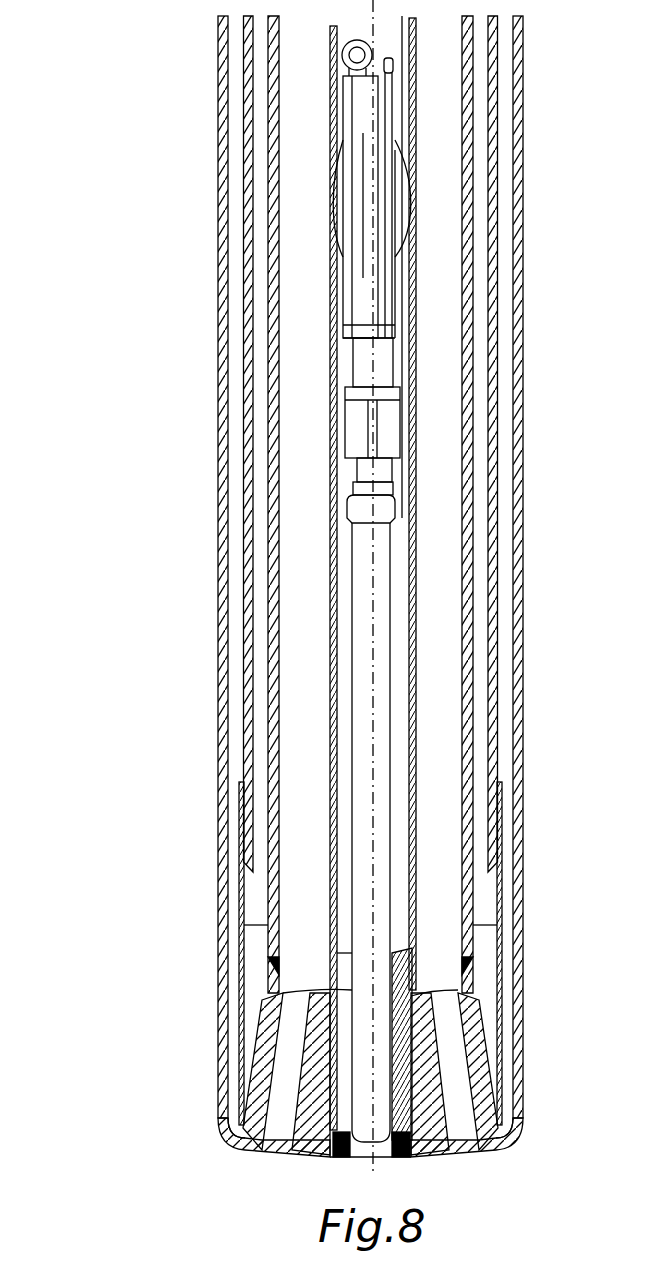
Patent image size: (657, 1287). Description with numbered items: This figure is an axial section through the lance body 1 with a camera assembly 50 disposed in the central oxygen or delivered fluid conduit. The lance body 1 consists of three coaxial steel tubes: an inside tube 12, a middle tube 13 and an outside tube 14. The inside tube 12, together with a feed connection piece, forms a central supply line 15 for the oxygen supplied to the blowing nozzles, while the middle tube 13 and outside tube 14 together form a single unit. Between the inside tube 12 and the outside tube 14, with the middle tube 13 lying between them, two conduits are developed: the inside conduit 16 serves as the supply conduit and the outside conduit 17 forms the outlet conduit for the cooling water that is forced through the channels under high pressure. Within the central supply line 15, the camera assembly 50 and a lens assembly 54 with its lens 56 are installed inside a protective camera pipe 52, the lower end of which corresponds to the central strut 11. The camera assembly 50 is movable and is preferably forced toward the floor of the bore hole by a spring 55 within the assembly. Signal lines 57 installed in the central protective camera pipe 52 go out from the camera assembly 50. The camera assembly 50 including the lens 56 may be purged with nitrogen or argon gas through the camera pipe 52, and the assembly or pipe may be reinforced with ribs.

The lance body 1 is at (147, 632).
The central strut 11 is at (403, 980).
The inside tube 12 is at (272, 502).
The middle tube 13 is at (248, 447).
The outside tube 14 is at (222, 677).
The central supply line 15 is at (300, 575).
The inside conduit 16 is at (257, 886).
The outside conduit 17 is at (234, 972).
The camera assembly 50 is at (345, 298).
The protective camera pipe 52 is at (330, 393).
The lens assembly 54 is at (297, 1162).
The spring 55 is at (380, 470).
The lens 56 is at (375, 1160).
The signal lines 57 is at (357, 31).